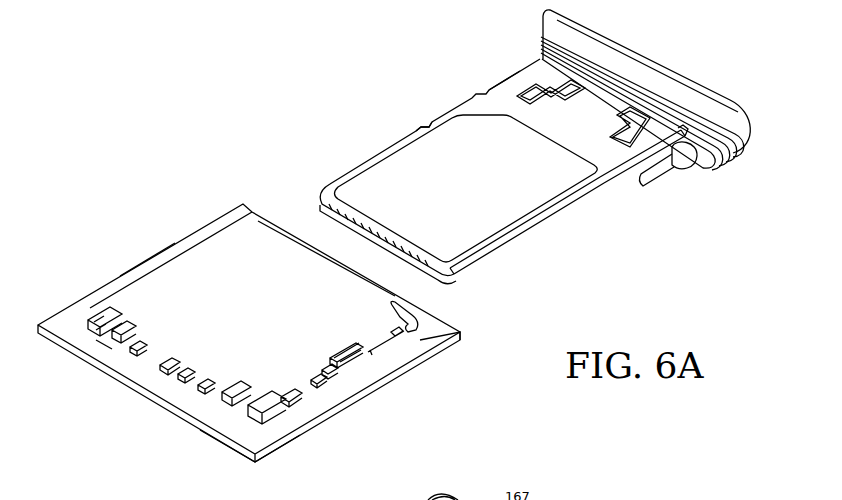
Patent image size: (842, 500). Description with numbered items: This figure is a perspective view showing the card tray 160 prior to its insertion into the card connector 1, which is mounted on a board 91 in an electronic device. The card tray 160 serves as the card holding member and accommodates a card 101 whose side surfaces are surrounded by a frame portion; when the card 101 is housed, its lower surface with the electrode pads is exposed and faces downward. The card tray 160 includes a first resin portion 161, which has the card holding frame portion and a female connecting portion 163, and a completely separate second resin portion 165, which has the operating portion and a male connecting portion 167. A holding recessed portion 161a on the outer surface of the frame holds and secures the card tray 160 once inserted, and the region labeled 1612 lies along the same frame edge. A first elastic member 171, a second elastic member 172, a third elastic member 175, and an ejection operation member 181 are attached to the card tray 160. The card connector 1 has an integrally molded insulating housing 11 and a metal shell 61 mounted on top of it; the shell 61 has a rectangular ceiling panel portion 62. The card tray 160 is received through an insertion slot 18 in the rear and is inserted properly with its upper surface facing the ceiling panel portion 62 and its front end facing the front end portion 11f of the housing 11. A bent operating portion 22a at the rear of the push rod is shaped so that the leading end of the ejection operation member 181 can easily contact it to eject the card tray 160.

The card connector 1 is at (143, 362).
The housing 11 is at (87, 330).
The front end portion 11f is at (102, 345).
The insertion slot 18 is at (267, 213).
The operating portion 22a is at (434, 333).
The shell 61 is at (163, 255).
The ceiling panel portion 62 is at (205, 250).
The board 91 is at (260, 437).
The card 101 is at (523, 225).
The card tray 160 is at (452, 76).
The first resin portion 161 is at (487, 95).
The holding recessed portion 161a is at (386, 141).
The tray rim wall 1612 is at (395, 253).
The female connecting portion 163 is at (623, 180).
The second resin portion 165 is at (687, 84).
The male connecting portion 167 is at (605, 105).
The first elastic member 171 is at (722, 172).
The second elastic member 172 is at (521, 80).
The third elastic member 175 is at (680, 170).
The ejection operation member 181 is at (655, 190).